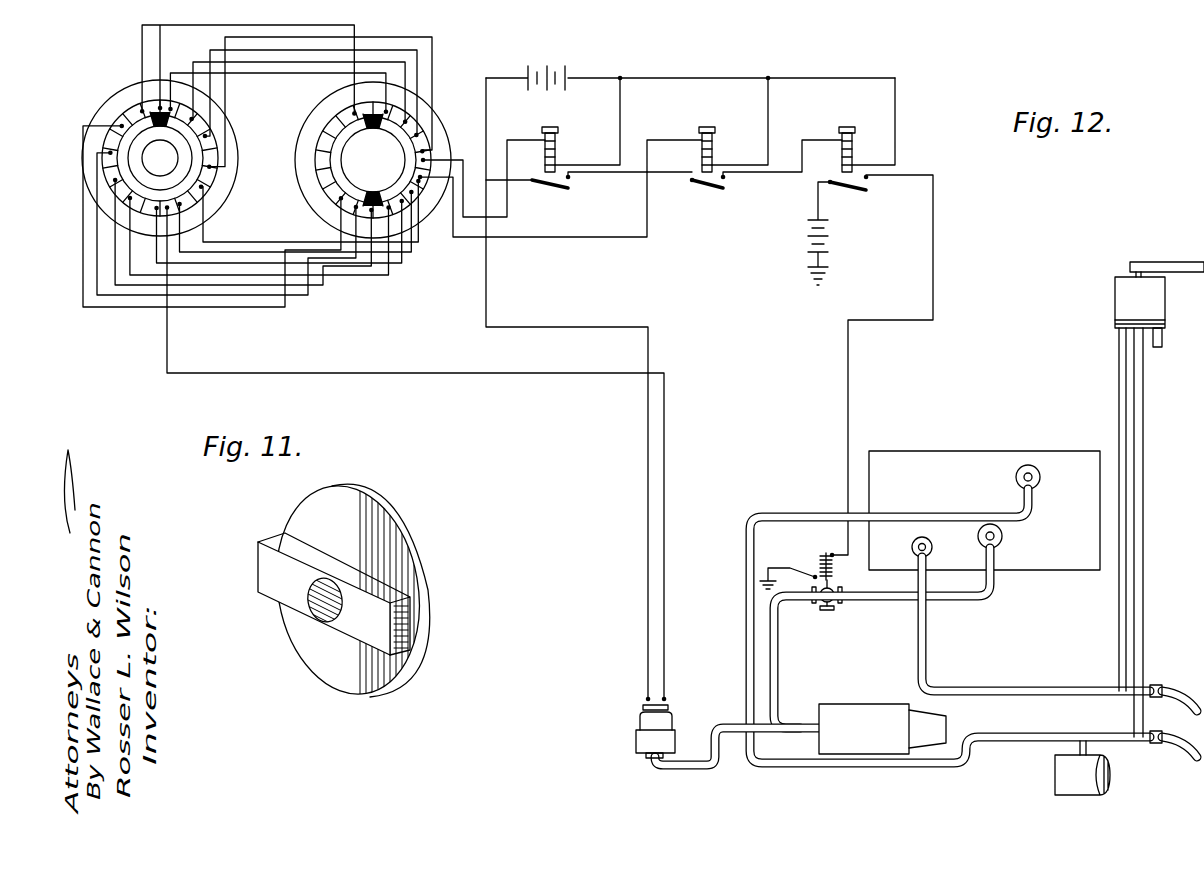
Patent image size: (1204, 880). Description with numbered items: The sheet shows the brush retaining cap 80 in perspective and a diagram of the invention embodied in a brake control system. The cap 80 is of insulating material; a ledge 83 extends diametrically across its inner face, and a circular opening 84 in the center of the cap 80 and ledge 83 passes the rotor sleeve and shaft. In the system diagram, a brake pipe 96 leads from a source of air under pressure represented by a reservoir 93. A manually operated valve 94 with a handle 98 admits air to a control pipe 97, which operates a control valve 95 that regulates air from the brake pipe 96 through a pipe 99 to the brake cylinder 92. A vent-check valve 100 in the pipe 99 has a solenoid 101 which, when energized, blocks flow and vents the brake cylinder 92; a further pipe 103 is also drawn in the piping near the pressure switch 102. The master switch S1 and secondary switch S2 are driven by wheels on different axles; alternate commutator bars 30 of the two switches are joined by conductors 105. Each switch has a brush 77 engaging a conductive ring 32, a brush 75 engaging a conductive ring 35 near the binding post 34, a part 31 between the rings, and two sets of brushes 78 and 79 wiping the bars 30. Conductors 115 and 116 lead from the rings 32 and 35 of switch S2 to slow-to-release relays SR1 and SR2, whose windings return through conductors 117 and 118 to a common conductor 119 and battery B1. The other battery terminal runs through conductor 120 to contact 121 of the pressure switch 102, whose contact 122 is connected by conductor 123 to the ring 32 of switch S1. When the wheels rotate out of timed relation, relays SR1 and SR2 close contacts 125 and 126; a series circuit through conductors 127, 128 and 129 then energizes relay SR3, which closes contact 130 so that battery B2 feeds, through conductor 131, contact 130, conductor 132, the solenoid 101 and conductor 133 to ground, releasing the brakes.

In FIG. 12, the master switch S1 is at (122, 82).
In FIG. 12, the secondary switch S2 is at (295, 120).
In FIG. 12, the brush 77 is at (160, 158).
In FIG. 12, the brushes 79 is at (157, 104).
In FIG. 12, the conductive ring 32 is at (130, 117).
In FIG. 12, the commutator bars 30 is at (216, 178).
In FIG. 12, the binding post 34 is at (412, 128).
In FIG. 12, the conductive ring 35 is at (350, 165).
In FIG. 12, the brush 75 is at (369, 172).
In FIG. 12, the segment insulation 31 is at (391, 180).
In FIG. 12, the brushes 78 is at (378, 212).
In FIG. 12, the conductors 105 is at (313, 30).
In FIG. 12, the conductor 123 is at (400, 373).
In FIG. 12, the conductor 115 is at (484, 170).
In FIG. 12, the conductor 116 is at (567, 238).
In FIG. 12, the battery B1 is at (552, 66).
In FIG. 12, the conductor 120 is at (486, 285).
In FIG. 12, the conductor 117 is at (620, 112).
In FIG. 12, the conductor 119 is at (715, 78).
In FIG. 12, the conductor 118 is at (768, 115).
In FIG. 12, the slow-to-release relay SR1 is at (558, 132).
In FIG. 12, the slow-to-release relay SR2 is at (714, 134).
In FIG. 12, the slow-to-release relay SR3 is at (850, 127).
In FIG. 12, the conductor 127 is at (492, 170).
In FIG. 12, the relay contact 125 is at (552, 187).
In FIG. 12, the conductor 128 is at (604, 172).
In FIG. 12, the relay contact 126 is at (708, 182).
In FIG. 12, the conductor 129 is at (785, 178).
In FIG. 12, the contact 130 is at (866, 188).
In FIG. 12, the conductor 132 is at (878, 318).
In FIG. 12, the battery B2 is at (830, 236).
In FIG. 12, the conductor 131 is at (818, 210).
In FIG. 12, the solenoid 101 is at (820, 558).
In FIG. 12, the conductor 133 is at (808, 576).
In FIG. 12, the vent-check valve 100 is at (835, 614).
In FIG. 12, the control valve 95 is at (982, 435).
In FIG. 12, the brake pipe 96 is at (1143, 545).
In FIG. 12, the pipe 99 is at (978, 584).
In FIG. 12, the control pipe 97 is at (922, 650).
In FIG. 12, the conduit 103 is at (680, 768).
In FIG. 12, the brake cylinder 92 is at (866, 755).
In FIG. 12, the reservoir 93 is at (1055, 775).
In FIG. 12, the manually operated valve 94 is at (1113, 257).
In FIG. 12, the handle 98 is at (1180, 262).
In FIG. 12, the pressure switch 102 is at (636, 726).
In FIG. 12, the contact 121 is at (666, 699).
In FIG. 12, the contact 122 is at (647, 697).
In FIG. 11, the brush retaining cap 80 is at (392, 536).
In FIG. 11, the ledge 83 is at (268, 560).
In FIG. 11, the circular opening 84 is at (325, 616).